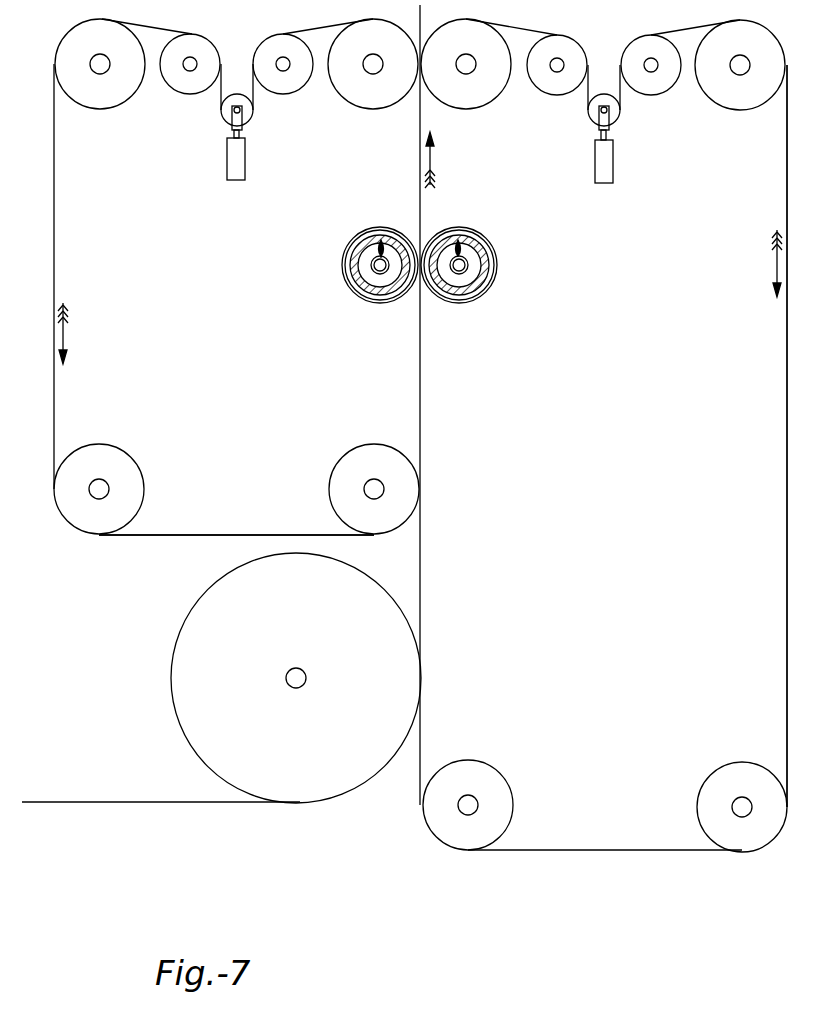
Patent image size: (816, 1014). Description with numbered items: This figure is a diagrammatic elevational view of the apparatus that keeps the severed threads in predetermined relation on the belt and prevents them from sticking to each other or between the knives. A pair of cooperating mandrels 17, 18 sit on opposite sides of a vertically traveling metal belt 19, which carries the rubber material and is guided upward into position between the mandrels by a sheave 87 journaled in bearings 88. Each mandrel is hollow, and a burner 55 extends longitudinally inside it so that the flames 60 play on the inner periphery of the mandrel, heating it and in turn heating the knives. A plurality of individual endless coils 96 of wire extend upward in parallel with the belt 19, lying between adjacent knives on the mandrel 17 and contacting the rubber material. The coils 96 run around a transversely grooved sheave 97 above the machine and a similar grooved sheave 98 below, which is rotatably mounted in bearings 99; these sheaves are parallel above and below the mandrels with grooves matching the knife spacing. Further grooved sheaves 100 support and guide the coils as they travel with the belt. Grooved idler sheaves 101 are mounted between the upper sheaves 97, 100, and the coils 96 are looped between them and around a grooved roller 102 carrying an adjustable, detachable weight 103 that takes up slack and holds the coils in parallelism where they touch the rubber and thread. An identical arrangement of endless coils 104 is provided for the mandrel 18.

The mandrel 17 is at (370, 238).
The mandrel 18 is at (490, 248).
The metal belt 19 is at (420, 17).
The burner 55 is at (390, 270).
The flames 60 is at (371, 240).
The sheave 87 is at (318, 803).
The bearings 88 is at (298, 690).
The endless coils 96 is at (190, 534).
The transversely grooved sheave 97 is at (367, 109).
The transversely grooved sheave 98 is at (348, 455).
The bearings 99 is at (375, 479).
The grooved sheaves 100 is at (92, 108).
The idler sheaves 101 is at (176, 92).
The grooved roller 102 is at (253, 118).
The adjustable and detachable weight 103 is at (240, 180).
The endless coils 104 is at (787, 553).